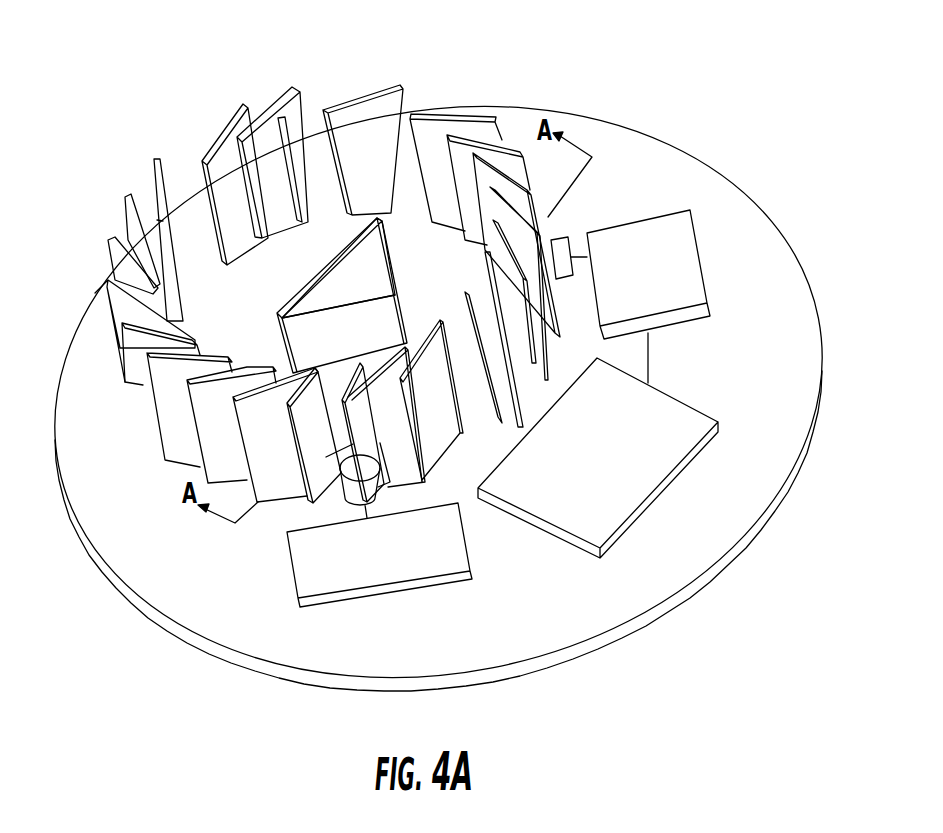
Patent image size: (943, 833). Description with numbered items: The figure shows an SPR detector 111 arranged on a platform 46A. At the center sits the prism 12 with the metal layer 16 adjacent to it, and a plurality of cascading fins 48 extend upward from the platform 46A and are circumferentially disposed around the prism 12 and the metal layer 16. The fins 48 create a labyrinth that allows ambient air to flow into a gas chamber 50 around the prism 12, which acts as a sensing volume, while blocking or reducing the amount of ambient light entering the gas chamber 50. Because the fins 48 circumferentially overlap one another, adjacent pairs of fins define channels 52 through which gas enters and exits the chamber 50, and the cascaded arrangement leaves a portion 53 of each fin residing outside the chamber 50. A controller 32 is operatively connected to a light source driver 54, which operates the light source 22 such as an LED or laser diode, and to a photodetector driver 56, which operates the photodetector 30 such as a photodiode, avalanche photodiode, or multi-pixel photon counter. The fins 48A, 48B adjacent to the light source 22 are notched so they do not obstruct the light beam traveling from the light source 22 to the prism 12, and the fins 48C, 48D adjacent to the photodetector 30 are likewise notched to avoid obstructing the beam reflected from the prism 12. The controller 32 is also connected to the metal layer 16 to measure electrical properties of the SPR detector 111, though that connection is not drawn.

The prism 12 is at (370, 277).
The metal layer 16 is at (316, 270).
The light source 22 is at (342, 485).
The photodetector 30 is at (573, 244).
The controller 32 is at (658, 490).
The platform 46A is at (70, 512).
The cascading fins 48 is at (350, 123).
The fin adjacent to light source 48A is at (343, 441).
The fin adjacent to light source 48B is at (402, 441).
The fin adjacent to photodetector 48C is at (538, 178).
The fin adjacent to photodetector 48D is at (535, 183).
The gas chamber 50 is at (258, 265).
The channels 52 is at (461, 443).
The portion of fin residing outside chamber 53 is at (210, 475).
The light source driver 54 is at (387, 590).
The photodetector driver 56 is at (706, 272).
The SPR detector 111 is at (811, 185).